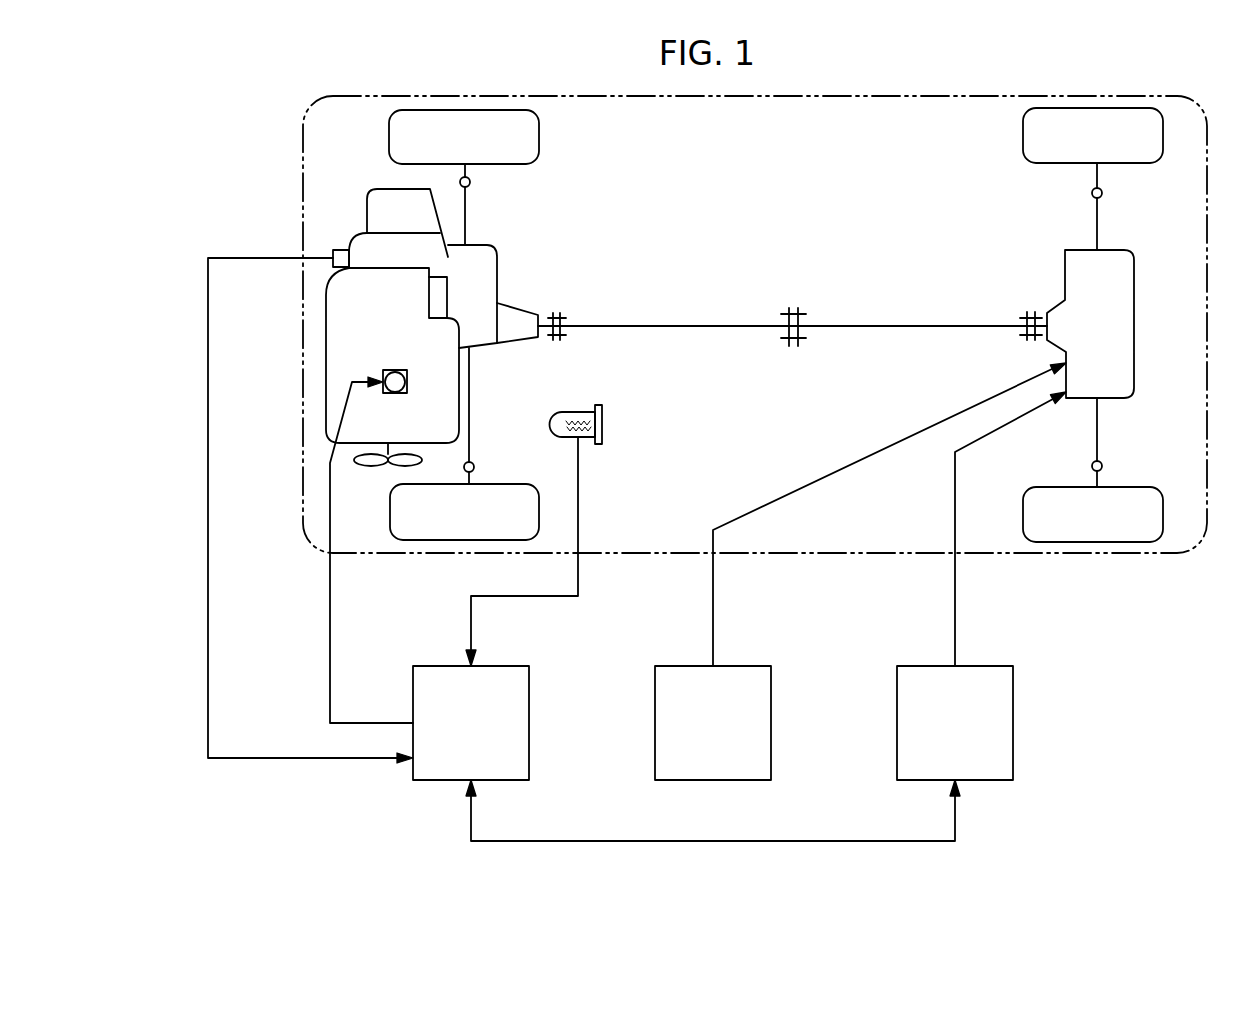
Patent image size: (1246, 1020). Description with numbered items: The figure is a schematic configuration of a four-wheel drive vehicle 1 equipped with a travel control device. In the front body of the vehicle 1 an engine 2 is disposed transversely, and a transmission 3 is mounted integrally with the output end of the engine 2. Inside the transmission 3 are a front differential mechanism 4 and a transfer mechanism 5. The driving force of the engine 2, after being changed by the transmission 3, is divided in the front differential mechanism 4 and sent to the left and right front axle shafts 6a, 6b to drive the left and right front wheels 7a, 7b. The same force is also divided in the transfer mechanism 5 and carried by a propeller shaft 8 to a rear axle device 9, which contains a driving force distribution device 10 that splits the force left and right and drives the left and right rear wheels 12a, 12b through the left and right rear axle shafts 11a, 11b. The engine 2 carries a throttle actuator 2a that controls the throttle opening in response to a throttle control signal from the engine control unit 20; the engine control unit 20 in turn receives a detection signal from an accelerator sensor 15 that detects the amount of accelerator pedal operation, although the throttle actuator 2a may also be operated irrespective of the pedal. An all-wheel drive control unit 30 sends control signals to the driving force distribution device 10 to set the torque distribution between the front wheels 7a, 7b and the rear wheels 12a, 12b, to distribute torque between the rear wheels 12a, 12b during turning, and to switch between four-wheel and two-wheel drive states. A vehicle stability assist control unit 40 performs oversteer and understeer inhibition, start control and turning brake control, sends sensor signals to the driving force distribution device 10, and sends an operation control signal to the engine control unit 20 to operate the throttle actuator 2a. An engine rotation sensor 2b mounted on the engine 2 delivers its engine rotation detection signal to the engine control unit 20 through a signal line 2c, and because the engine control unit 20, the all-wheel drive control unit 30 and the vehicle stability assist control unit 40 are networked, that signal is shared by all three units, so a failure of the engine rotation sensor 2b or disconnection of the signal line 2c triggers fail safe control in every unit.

The vehicle 1 is at (303, 160).
The engine 2 is at (326, 345).
The throttle actuator 2a is at (395, 370).
The engine rotation sensor 2b is at (333, 251).
The signal line 2c is at (208, 485).
The transmission 3 is at (367, 215).
The front differential mechanism 4 is at (497, 262).
The transfer mechanism 5 is at (529, 343).
The left front axle shaft 6a is at (469, 406).
The right front axle shaft 6b is at (465, 210).
The left front wheel 7a is at (517, 484).
The right front wheel 7b is at (539, 148).
The propeller shaft 8 is at (703, 326).
The rear axle device 9 is at (1022, 269).
The driving force distribution device 10 is at (1134, 320).
The left rear axle shaft 11a is at (1097, 430).
The right rear axle shaft 11b is at (1097, 212).
The left rear wheel 12a is at (1062, 487).
The right rear wheel 12b is at (1023, 146).
The accelerator sensor 15 is at (578, 412).
The engine control unit 20 is at (497, 665).
The all-wheel drive control unit 30 is at (741, 665).
The vehicle stability assist control unit 40 is at (985, 665).